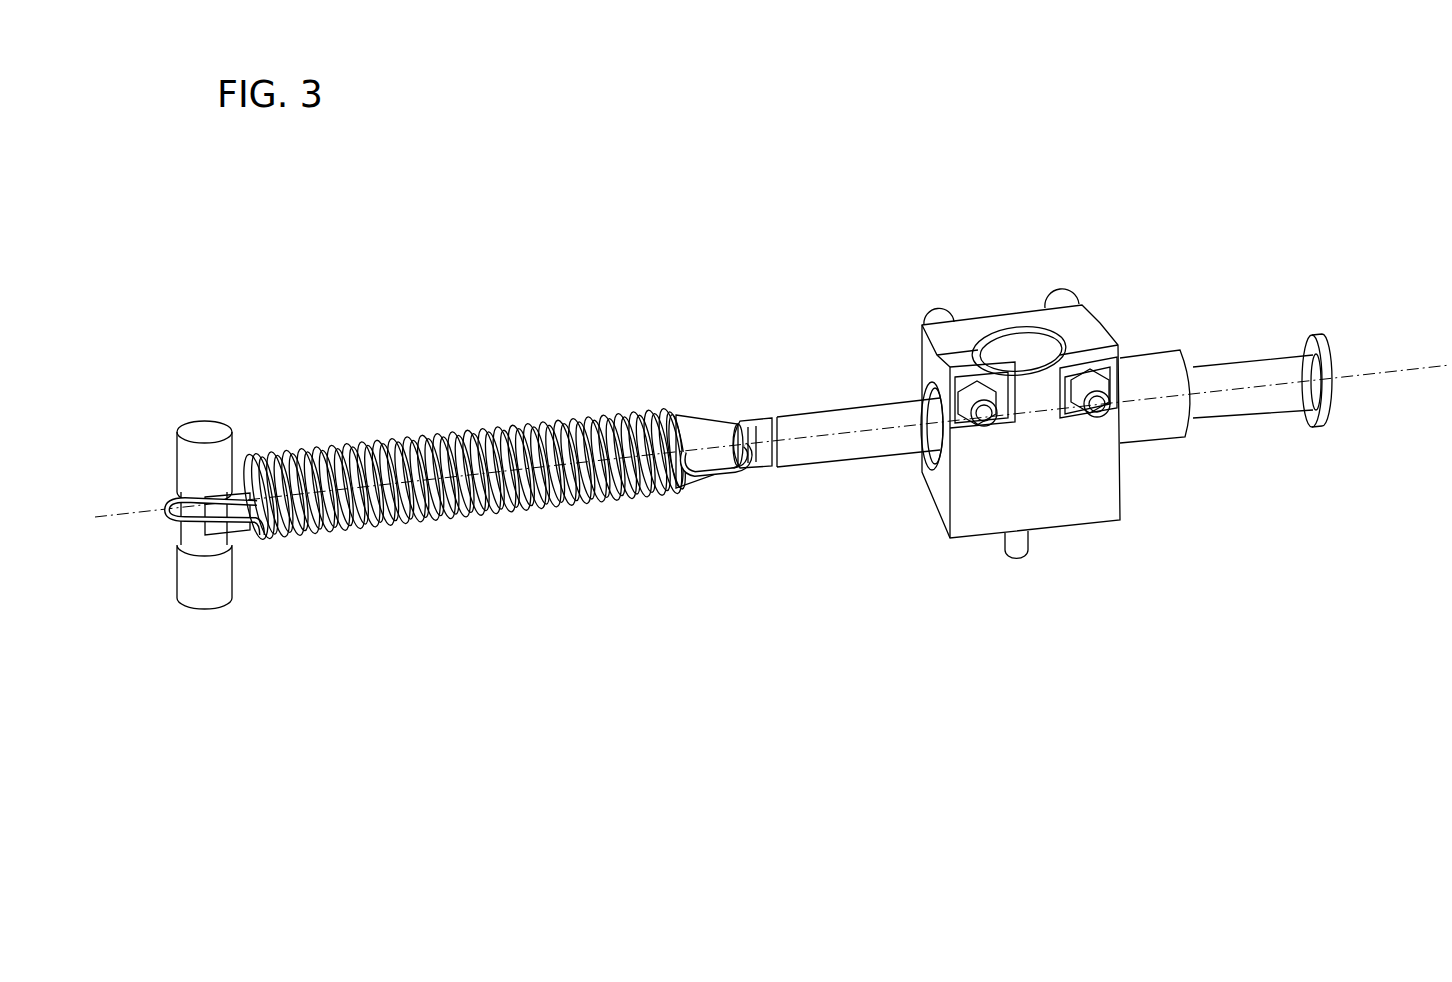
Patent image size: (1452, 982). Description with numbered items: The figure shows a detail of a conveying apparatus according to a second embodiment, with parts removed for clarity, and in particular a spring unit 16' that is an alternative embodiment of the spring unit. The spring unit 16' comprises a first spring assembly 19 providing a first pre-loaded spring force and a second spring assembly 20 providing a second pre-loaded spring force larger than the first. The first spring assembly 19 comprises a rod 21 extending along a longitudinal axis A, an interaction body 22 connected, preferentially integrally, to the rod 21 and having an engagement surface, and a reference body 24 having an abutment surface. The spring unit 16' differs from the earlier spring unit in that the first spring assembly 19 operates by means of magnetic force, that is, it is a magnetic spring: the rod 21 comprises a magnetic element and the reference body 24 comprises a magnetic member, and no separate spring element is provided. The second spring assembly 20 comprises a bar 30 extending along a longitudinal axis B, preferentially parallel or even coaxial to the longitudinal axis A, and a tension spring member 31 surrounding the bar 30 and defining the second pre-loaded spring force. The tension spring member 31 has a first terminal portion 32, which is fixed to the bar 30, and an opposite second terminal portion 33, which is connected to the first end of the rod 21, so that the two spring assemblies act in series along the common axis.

The spring unit 16' is at (1040, 340).
The first spring assembly 19 is at (1267, 267).
The second spring assembly 20 is at (307, 652).
The rod 21 is at (875, 415).
The interaction body 22 is at (1165, 358).
The reference body 24 is at (962, 330).
The bar 30 is at (708, 425).
The tension spring member 31 is at (525, 520).
The first terminal portion 32 is at (173, 510).
The second terminal portion 33 is at (757, 472).
The longitudinal axis A is at (1403, 370).
The longitudinal axis B is at (160, 515).